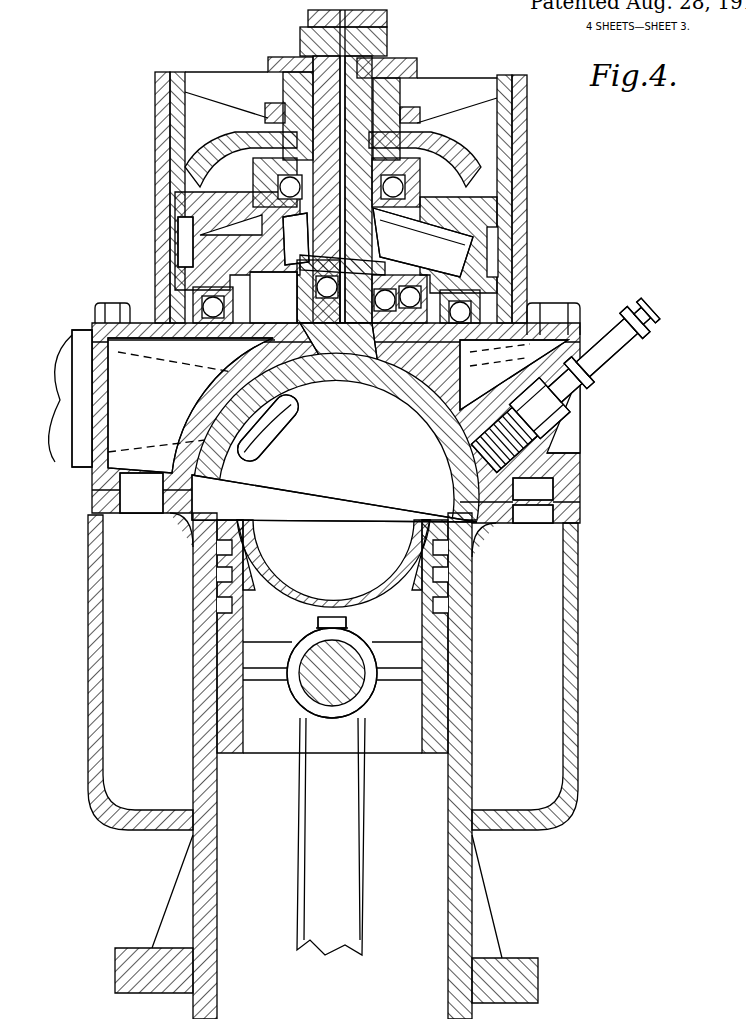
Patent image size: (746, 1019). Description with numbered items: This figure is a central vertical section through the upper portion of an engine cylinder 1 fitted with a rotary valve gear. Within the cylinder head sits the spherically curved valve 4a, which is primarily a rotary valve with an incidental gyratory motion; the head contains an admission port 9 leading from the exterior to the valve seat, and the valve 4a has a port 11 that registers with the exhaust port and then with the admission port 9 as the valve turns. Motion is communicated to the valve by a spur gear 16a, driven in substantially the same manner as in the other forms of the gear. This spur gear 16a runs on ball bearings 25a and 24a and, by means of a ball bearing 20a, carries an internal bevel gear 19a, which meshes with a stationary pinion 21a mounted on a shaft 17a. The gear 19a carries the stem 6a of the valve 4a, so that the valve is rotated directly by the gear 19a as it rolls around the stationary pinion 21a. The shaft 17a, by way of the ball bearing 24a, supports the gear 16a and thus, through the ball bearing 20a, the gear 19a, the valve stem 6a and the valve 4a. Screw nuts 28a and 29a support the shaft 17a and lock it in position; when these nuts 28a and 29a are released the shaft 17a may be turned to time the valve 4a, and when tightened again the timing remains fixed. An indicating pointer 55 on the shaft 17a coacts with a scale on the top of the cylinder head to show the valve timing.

The engine cylinder 1 is at (205, 887).
The valve 4a is at (432, 408).
The stem 6a is at (345, 386).
The admission port 9 is at (135, 380).
The port 11 is at (278, 440).
The spur gear 16a is at (187, 240).
The shaft 17a is at (372, 98).
The internal bevel gear 19a is at (476, 254).
The ball bearing 20a is at (497, 297).
The stationary pinion 21a is at (492, 212).
The ball bearing 24a is at (405, 187).
The ball bearing 25a is at (191, 362).
The screw nut 28a is at (300, 48).
The screw nut 29a is at (308, 26).
The indicating pointer 55 is at (387, 16).